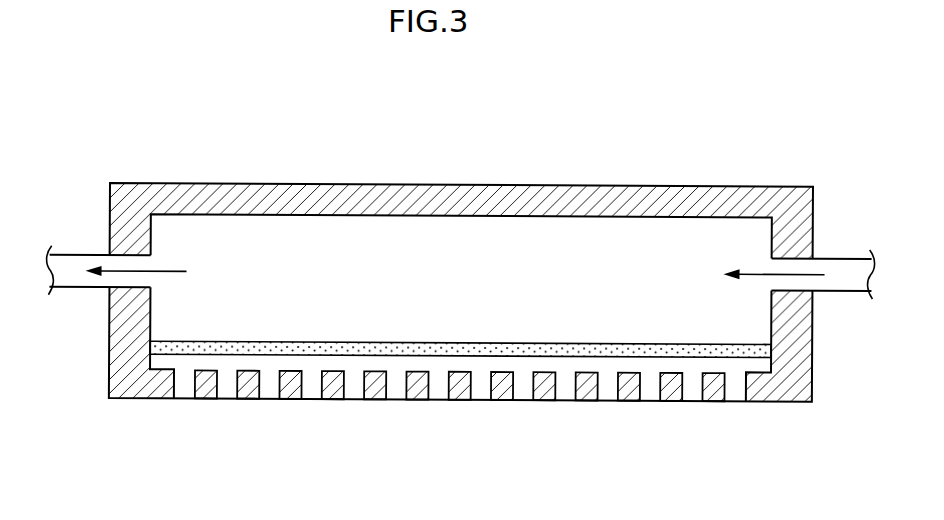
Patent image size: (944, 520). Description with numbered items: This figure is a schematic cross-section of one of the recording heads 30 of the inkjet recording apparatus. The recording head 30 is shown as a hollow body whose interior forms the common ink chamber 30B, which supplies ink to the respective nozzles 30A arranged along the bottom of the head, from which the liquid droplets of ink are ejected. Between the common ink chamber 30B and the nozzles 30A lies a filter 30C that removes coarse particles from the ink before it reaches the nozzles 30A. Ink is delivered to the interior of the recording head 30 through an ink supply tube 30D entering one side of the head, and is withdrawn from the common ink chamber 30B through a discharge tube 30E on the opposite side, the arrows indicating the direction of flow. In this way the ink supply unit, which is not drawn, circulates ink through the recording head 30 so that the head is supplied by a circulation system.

The recording head 30 is at (713, 113).
The nozzles 30A is at (183, 400).
The common ink chamber 30B is at (480, 290).
The filter 30C is at (207, 341).
The ink supply tube 30D is at (838, 257).
The discharge tube 30E is at (73, 253).